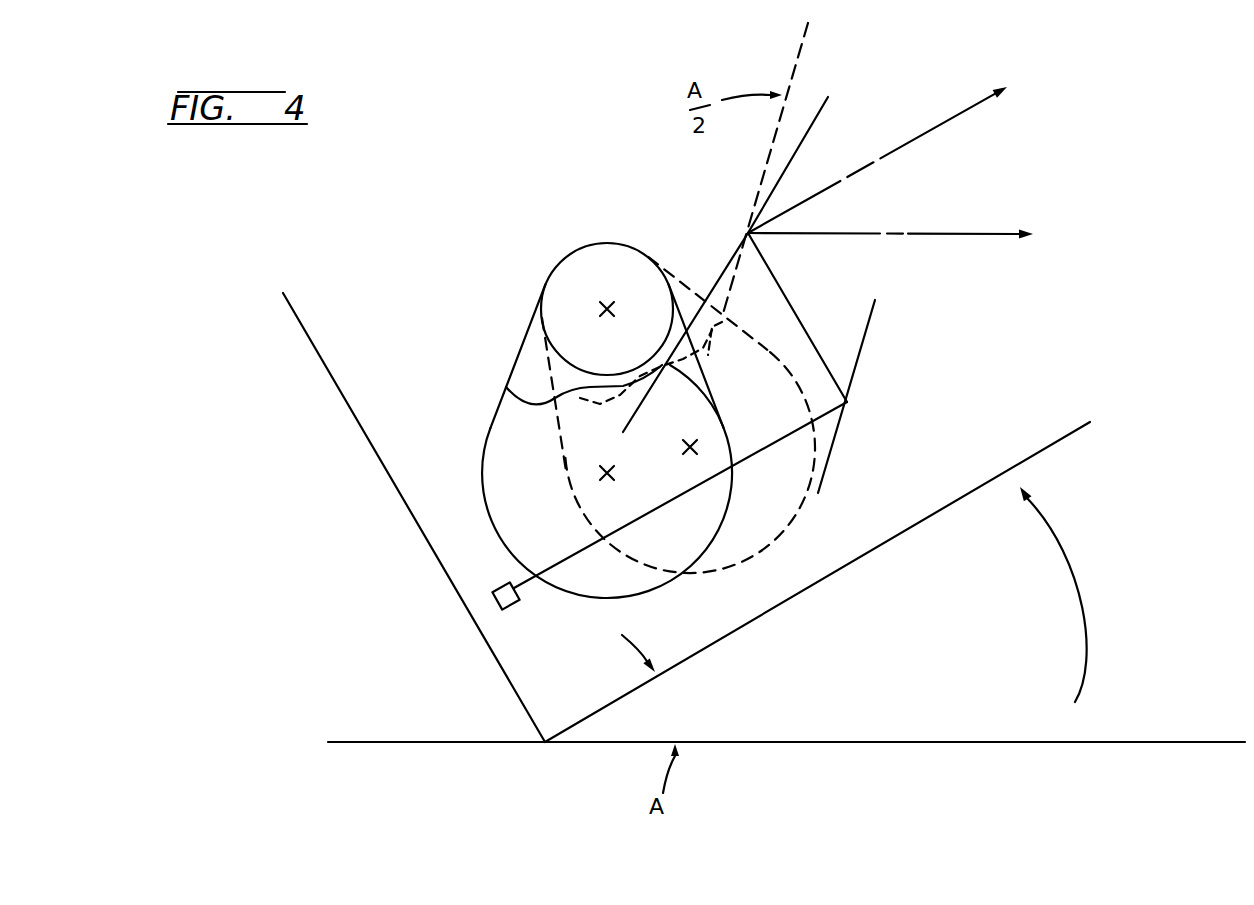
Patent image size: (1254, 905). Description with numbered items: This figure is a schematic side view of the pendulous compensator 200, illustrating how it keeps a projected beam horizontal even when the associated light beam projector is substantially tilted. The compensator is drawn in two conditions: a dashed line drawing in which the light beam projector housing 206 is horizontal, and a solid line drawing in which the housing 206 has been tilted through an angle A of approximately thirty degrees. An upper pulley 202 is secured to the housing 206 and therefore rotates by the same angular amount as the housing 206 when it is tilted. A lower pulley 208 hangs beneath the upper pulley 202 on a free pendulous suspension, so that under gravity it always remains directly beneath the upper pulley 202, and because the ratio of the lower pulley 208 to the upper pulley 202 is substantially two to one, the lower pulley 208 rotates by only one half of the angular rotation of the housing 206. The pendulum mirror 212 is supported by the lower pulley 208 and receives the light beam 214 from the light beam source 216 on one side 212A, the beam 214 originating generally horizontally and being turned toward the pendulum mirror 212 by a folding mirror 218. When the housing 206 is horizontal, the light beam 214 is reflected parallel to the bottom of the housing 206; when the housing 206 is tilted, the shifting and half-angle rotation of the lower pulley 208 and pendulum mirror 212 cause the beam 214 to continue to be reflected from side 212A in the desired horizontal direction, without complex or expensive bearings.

The pendulous compensator 200 is at (485, 290).
The first upper pulley 202 is at (600, 245).
The housing 206 is at (343, 398).
The first lower pulley 208 is at (498, 541).
The pendulum mirror 212 is at (810, 50).
The one side of the pendulum mirror 212A is at (788, 150).
The light beam 214 is at (897, 143).
The light beam source 216 is at (520, 598).
The folding mirror 218 is at (868, 323).